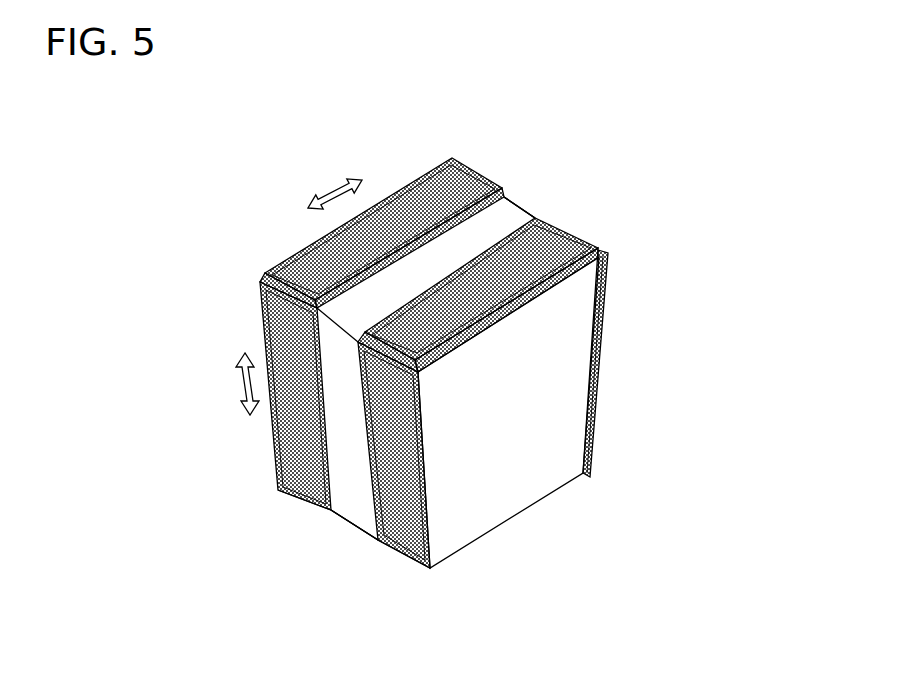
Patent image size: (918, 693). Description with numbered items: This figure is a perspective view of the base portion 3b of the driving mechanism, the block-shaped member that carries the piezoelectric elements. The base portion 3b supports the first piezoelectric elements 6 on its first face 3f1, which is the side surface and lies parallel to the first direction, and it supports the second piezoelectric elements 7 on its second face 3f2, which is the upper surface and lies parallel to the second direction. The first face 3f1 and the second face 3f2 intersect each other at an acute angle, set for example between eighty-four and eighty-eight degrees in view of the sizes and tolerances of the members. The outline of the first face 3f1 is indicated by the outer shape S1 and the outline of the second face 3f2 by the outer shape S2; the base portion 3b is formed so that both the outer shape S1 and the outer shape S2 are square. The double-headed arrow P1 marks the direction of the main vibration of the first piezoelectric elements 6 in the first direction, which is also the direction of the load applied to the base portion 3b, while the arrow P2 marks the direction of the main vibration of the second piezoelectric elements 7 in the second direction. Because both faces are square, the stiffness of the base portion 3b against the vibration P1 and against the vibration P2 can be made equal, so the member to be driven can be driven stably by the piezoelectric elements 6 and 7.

The base portion 3b is at (573, 390).
The second piezoelectric elements 7 is at (320, 267).
The first piezoelectric elements 6 is at (285, 330).
The first face 3f1 is at (353, 493).
The outer shape of the first face S1 is at (363, 532).
The second face 3f2 is at (523, 226).
The outer shape of the second face S2 is at (520, 202).
The direction of vibration of the first piezoelectric elements P1 is at (240, 388).
The direction of vibration of the second piezoelectric elements P2 is at (330, 192).